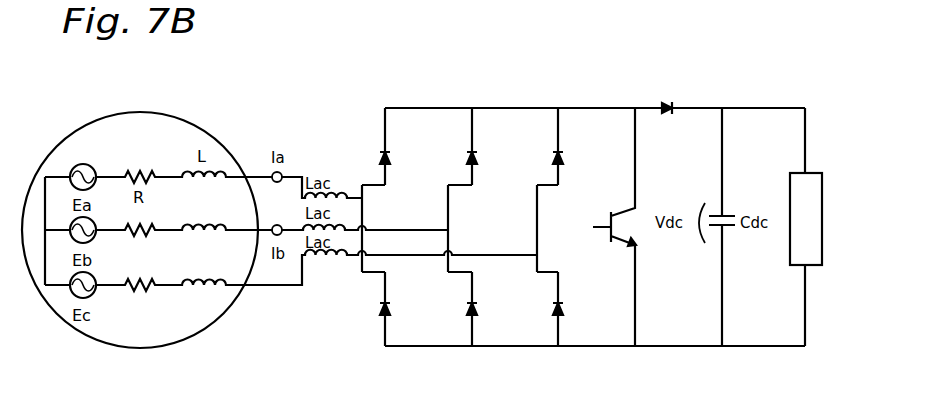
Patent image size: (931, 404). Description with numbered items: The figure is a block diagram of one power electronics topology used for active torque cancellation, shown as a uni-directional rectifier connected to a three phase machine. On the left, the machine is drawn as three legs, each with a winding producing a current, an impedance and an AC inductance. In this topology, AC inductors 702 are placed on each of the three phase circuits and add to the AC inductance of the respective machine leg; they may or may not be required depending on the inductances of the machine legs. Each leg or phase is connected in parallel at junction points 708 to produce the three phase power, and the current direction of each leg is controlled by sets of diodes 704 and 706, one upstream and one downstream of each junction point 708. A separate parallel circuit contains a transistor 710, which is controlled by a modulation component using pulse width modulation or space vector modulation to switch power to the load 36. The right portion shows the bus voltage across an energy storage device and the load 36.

The AC inductors 702 is at (320, 274).
The diodes 704 is at (388, 151).
The diodes 706 is at (389, 303).
The junction points 708 is at (537, 254).
The transistor 710 is at (608, 215).
The load 36 is at (803, 270).